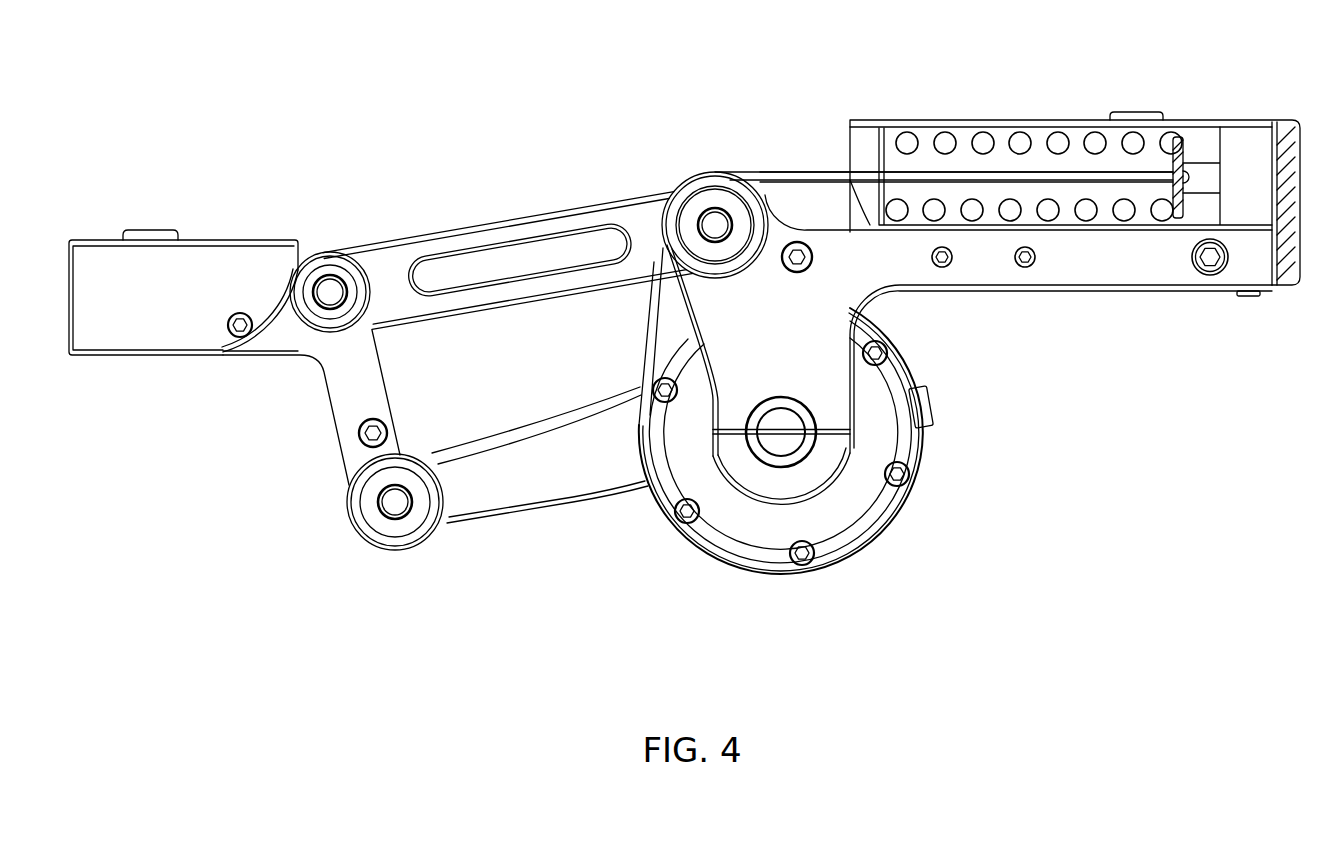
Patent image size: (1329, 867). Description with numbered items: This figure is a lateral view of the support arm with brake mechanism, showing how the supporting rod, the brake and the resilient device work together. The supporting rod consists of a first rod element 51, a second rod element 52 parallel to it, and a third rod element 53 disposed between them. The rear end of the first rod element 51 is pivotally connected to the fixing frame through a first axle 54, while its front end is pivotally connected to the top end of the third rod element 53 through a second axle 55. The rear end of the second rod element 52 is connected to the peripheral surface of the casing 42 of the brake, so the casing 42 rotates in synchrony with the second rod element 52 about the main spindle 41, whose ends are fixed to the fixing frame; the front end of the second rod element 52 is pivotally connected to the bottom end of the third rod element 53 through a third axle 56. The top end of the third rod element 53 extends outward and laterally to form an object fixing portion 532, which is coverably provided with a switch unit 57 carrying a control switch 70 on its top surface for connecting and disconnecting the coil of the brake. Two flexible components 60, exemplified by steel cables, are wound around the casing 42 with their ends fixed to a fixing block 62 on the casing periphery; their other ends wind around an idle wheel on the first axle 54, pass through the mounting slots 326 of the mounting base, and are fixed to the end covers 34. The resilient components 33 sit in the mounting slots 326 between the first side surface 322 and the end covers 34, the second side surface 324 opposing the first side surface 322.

The resilient component 33 is at (1020, 143).
The end cover 34 is at (1178, 143).
The main spindle 41 is at (797, 440).
The casing 42 is at (755, 525).
The first rod element 51 is at (545, 228).
The second rod element 52 is at (518, 492).
The third rod element 53 is at (355, 392).
The first axle 54 is at (710, 225).
The second axle 55 is at (338, 285).
The third axle 56 is at (393, 500).
The switch unit 57 is at (97, 317).
The flexible component 60 is at (782, 172).
The fixing block 62 is at (938, 406).
The control switch 70 is at (150, 233).
The first side surface 322 is at (870, 127).
The second side surface 324 is at (1207, 123).
The mounting slot 326 is at (1073, 162).
The object fixing portion 532 is at (268, 347).